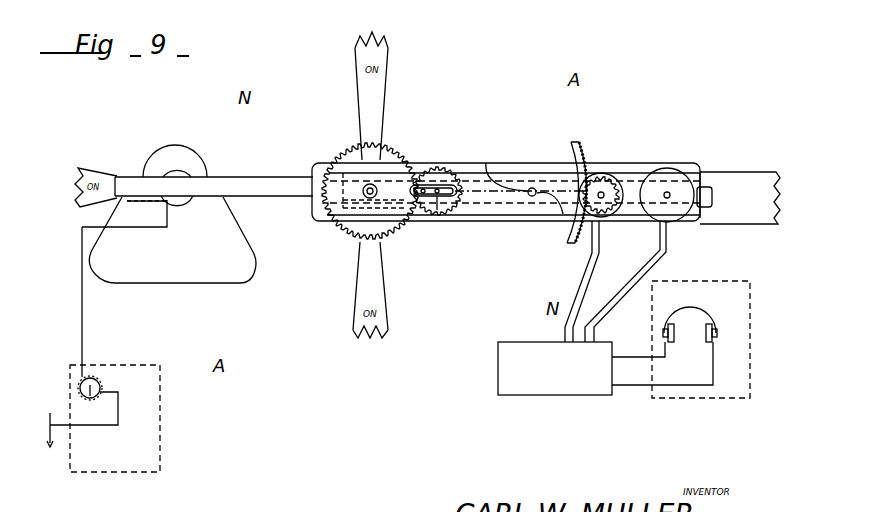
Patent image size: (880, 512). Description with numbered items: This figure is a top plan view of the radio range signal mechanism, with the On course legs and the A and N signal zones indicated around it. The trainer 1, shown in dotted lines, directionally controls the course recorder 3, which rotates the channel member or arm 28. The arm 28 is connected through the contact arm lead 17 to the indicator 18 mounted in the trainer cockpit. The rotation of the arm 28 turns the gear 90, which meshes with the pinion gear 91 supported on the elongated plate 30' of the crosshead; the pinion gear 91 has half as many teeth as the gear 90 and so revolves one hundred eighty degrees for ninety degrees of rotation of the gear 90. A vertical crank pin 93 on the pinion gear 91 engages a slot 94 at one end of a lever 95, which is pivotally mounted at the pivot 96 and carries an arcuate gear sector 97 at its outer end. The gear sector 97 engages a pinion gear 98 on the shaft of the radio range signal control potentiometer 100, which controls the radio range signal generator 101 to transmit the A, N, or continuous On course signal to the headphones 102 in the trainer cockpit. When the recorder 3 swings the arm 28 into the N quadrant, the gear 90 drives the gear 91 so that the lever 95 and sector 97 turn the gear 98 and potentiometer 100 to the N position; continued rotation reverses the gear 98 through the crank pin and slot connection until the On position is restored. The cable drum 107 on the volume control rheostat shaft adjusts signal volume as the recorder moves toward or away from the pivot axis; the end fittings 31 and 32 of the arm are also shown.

The trainer 1 is at (157, 420).
The course recorder 3 is at (241, 246).
The lead 17 is at (84, 314).
The indicator 18 is at (102, 389).
The channel member 28 is at (242, 183).
The elongated plate 30' is at (506, 181).
The end cap 31 is at (704, 207).
The bar 32 is at (717, 173).
The gear 90 is at (392, 153).
The pinion gear 91 is at (446, 170).
The crank pin 93 is at (424, 186).
The slot 94 is at (437, 200).
The lever 95 is at (487, 183).
The pivot 96 is at (530, 197).
The arcuate gear sector 97 is at (578, 150).
The pinion gear 98 is at (610, 172).
The radio range signal control potentiometer 100 is at (606, 226).
The radio range signal generator 101 is at (556, 388).
The headphones 102 is at (710, 324).
The cable drum 107 is at (669, 170).